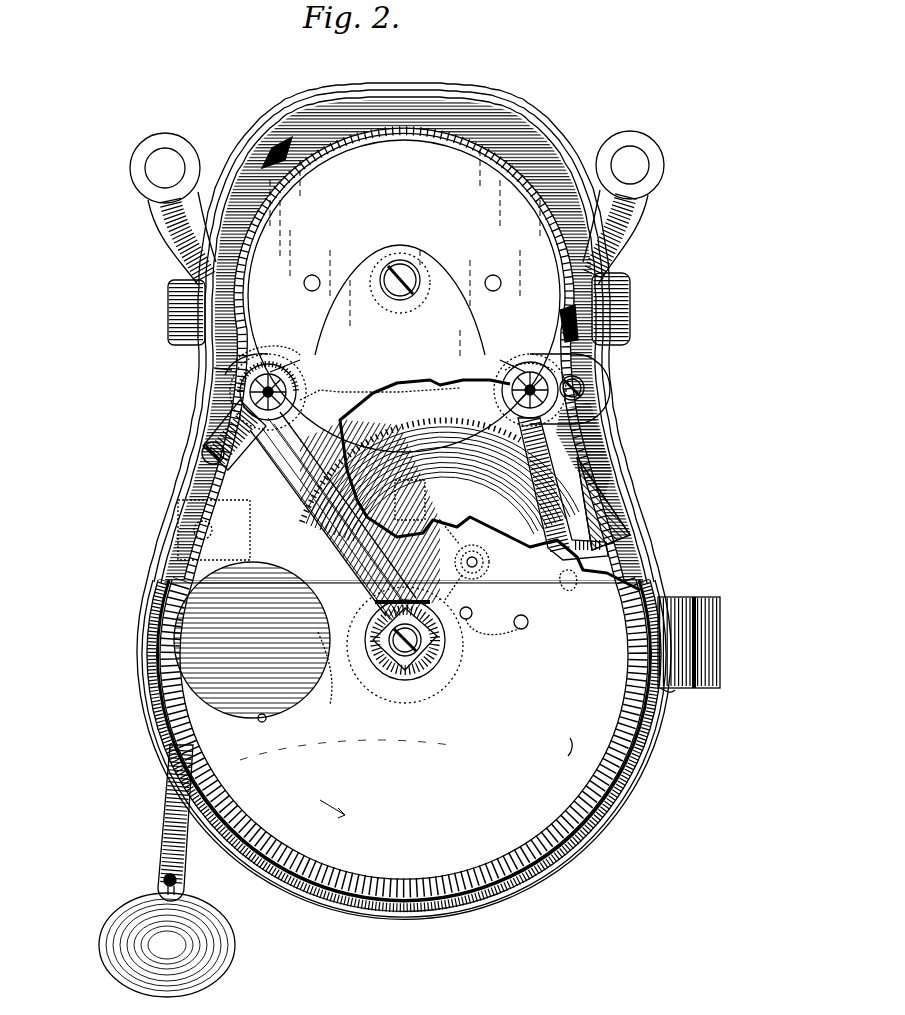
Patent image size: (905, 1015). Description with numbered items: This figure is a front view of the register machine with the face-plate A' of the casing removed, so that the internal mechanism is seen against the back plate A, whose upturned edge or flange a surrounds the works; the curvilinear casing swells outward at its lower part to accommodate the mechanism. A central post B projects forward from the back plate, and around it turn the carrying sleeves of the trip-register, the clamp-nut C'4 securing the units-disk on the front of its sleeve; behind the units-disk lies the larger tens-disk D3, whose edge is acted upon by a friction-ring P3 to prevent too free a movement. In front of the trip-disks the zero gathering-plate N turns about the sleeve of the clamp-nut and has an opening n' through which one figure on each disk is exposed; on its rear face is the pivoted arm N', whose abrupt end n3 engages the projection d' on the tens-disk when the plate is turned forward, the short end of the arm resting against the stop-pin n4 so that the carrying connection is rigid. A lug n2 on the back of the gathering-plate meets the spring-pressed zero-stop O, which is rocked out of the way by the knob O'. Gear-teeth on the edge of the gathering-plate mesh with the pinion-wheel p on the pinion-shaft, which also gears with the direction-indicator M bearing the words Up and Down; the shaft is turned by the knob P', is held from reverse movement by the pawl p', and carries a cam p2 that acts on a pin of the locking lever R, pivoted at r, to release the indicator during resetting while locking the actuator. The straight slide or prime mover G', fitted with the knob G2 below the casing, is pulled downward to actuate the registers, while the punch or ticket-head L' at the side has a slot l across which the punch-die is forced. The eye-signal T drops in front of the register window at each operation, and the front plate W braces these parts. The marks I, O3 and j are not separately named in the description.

The back plate A is at (404, 501).
The face-plate A' is at (397, 232).
The upturned edge or flange a is at (399, 90).
The internal toothed ring I is at (488, 220).
The direction-indicator M is at (405, 249).
The front plate W is at (455, 431).
The pinion-wheel p is at (268, 380).
The cam p2 is at (276, 358).
The lever R is at (246, 359).
The pivot r is at (214, 368).
The pawl p' is at (222, 478).
The knob P' is at (371, 404).
The friction-ring P3 is at (584, 516).
The knob O' is at (552, 383).
The zero-stop O is at (563, 489).
The lever arm O3 is at (314, 668).
The projection d' is at (440, 497).
The square or abrupt end n3 is at (411, 500).
The lug n2 is at (571, 586).
The stop-pin n4 is at (494, 625).
The opening n' is at (272, 731).
The pivoted arm N' is at (476, 560).
The zero gathering-plate N is at (388, 749).
The eye-signal T is at (340, 516).
The central post B is at (396, 655).
The clamp-nut C'4 is at (416, 645).
The tens-disk D3 is at (232, 640).
The slide or prime mover G' is at (165, 823).
The knob or operating device G2 is at (167, 945).
The punch or ticket-head L' is at (689, 642).
The slot l is at (678, 688).
The pin j is at (568, 747).